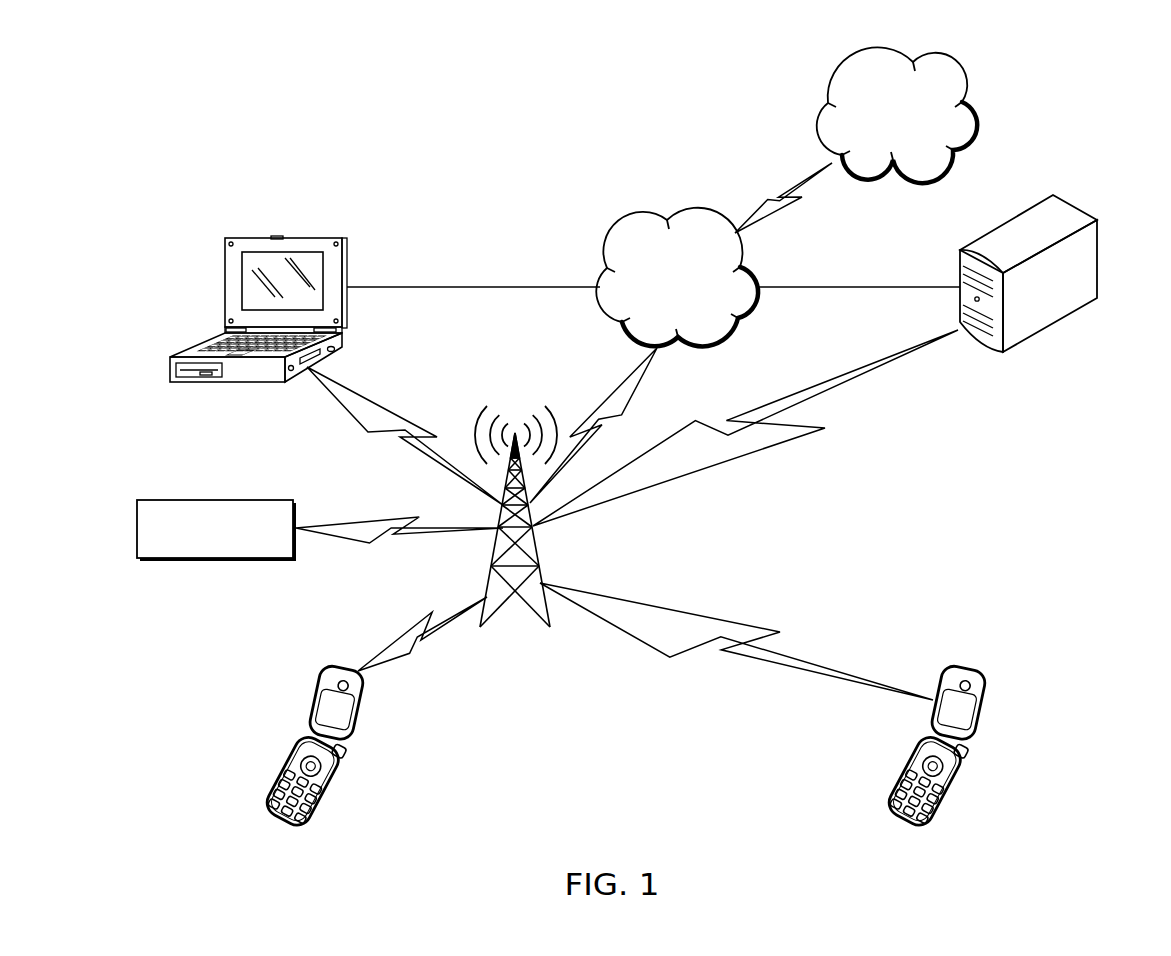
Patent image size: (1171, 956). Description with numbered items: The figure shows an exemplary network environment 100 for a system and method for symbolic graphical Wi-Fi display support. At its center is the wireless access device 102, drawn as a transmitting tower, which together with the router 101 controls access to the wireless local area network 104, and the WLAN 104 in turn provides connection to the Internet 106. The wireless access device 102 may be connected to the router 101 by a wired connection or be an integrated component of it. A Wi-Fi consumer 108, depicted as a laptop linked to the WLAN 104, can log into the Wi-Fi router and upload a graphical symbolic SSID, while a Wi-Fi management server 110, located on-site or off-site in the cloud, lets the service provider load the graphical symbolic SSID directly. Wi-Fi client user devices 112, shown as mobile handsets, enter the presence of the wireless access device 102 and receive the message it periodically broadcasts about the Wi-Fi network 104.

The network environment 100 is at (143, 100).
The router 101 is at (137, 530).
The wireless access device 102 is at (536, 543).
The wireless local area network 104 is at (665, 215).
The Internet 106 is at (822, 100).
The Wi-Fi consumer 108 is at (306, 238).
The Wi-Fi management server 110 is at (1072, 205).
The Wi-Fi client user device 112 is at (303, 726).